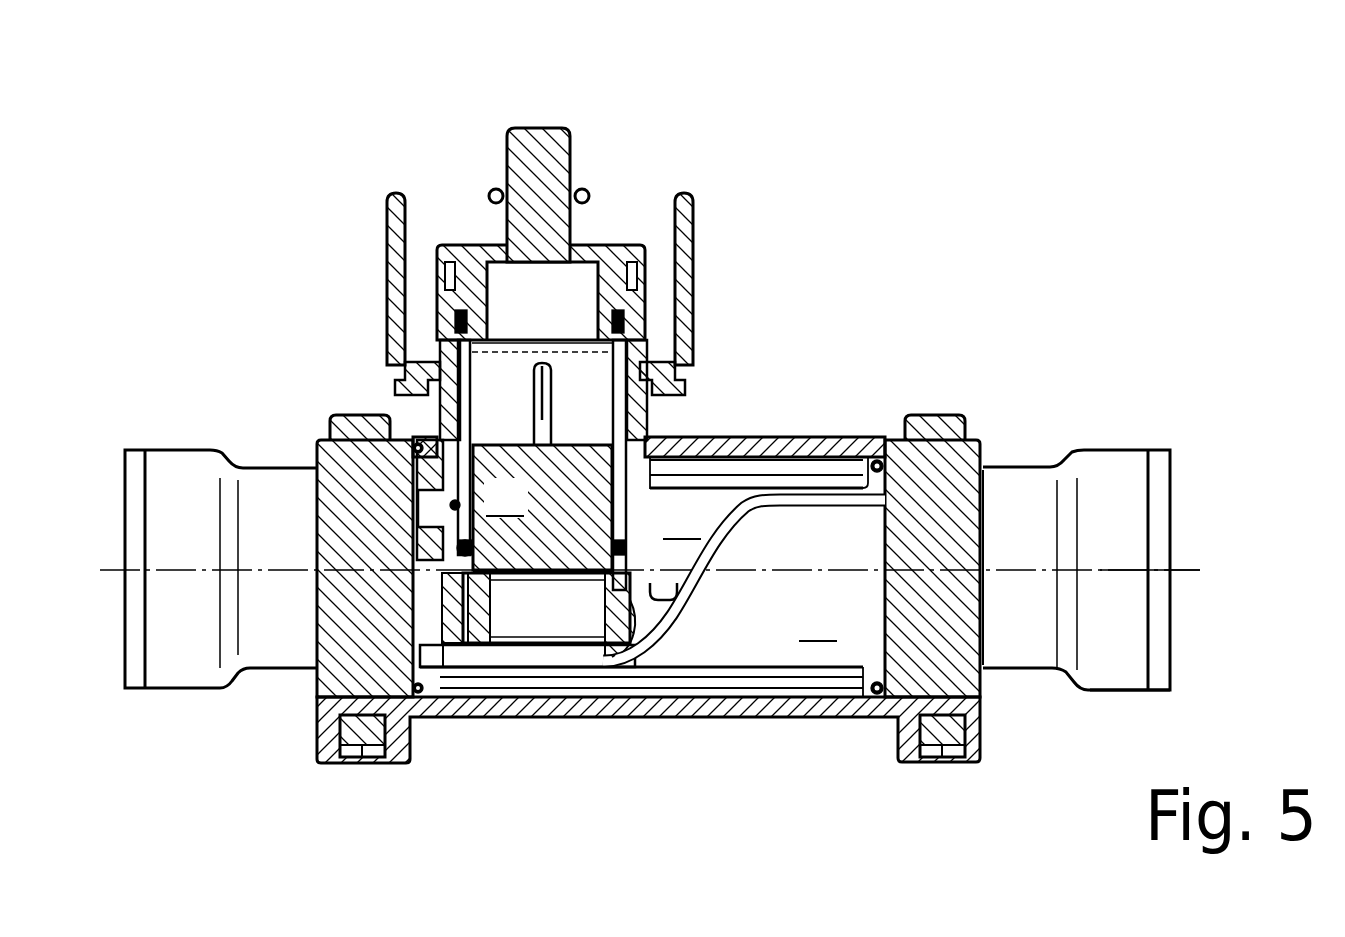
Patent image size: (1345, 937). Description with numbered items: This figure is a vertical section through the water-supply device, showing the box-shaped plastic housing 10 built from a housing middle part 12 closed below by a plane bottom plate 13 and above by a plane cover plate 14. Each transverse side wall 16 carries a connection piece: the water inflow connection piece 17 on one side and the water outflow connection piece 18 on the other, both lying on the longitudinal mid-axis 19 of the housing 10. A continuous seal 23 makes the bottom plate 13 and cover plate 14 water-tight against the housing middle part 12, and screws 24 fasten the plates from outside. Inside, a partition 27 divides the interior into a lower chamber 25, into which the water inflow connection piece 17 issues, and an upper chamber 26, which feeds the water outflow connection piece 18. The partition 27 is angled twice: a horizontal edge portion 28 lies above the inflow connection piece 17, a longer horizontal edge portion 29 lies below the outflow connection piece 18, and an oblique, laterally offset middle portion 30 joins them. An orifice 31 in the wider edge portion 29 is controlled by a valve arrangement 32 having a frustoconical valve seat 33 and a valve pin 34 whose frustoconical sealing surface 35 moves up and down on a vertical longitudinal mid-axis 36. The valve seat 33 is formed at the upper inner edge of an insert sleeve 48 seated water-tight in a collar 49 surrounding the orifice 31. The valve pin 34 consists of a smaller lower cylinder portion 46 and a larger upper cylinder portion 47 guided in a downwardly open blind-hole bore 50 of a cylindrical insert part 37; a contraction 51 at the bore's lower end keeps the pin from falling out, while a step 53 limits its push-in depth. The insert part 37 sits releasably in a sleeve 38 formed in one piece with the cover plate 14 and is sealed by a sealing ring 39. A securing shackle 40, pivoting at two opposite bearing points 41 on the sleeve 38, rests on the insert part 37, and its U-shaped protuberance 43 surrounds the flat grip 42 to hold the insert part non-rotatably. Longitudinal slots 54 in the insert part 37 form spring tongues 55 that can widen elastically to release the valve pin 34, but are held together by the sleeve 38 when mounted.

The housing 10 is at (983, 463).
The housing middle part 12 is at (990, 530).
The bottom plate 13 is at (843, 705).
The cover plate 14 is at (883, 437).
The transverse side wall 16 is at (1062, 505).
The water inflow connection piece 17 is at (1097, 665).
The water outflow connection piece 18 is at (170, 640).
The longitudinal mid-axis 19 is at (1113, 570).
The seal 23 is at (957, 500).
The screw 24 is at (972, 397).
The lower chamber 25 is at (818, 620).
The upper chamber 26 is at (682, 519).
The partition 27 is at (727, 590).
The edge portion 28 is at (835, 465).
The edge portion 29 is at (457, 683).
The middle portion 30 is at (700, 600).
The orifice 31 is at (547, 612).
The valve arrangement 32 is at (660, 365).
The valve seat 33 is at (618, 660).
The valve pin 34 is at (542, 507).
The sealing surface 35 is at (482, 645).
The vertical longitudinal mid-axis 36 is at (558, 640).
The insert part 37 is at (613, 250).
The sleeve 38 is at (655, 428).
The sealing ring 39 is at (613, 268).
The securing shackle 40 is at (690, 235).
The bearing point 41 is at (418, 378).
The grip 42 is at (527, 155).
The protuberance 43 is at (590, 190).
The lower cylinder portion 46 is at (458, 558).
The upper cylinder portion 47 is at (660, 445).
The insert sleeve 48 is at (465, 690).
The collar 49 is at (445, 610).
The blind-hole bore 50 is at (580, 390).
The contraction 51 is at (468, 549).
The step 53 is at (533, 390).
The slot 54 is at (455, 325).
The spring tongue 55 is at (503, 423).